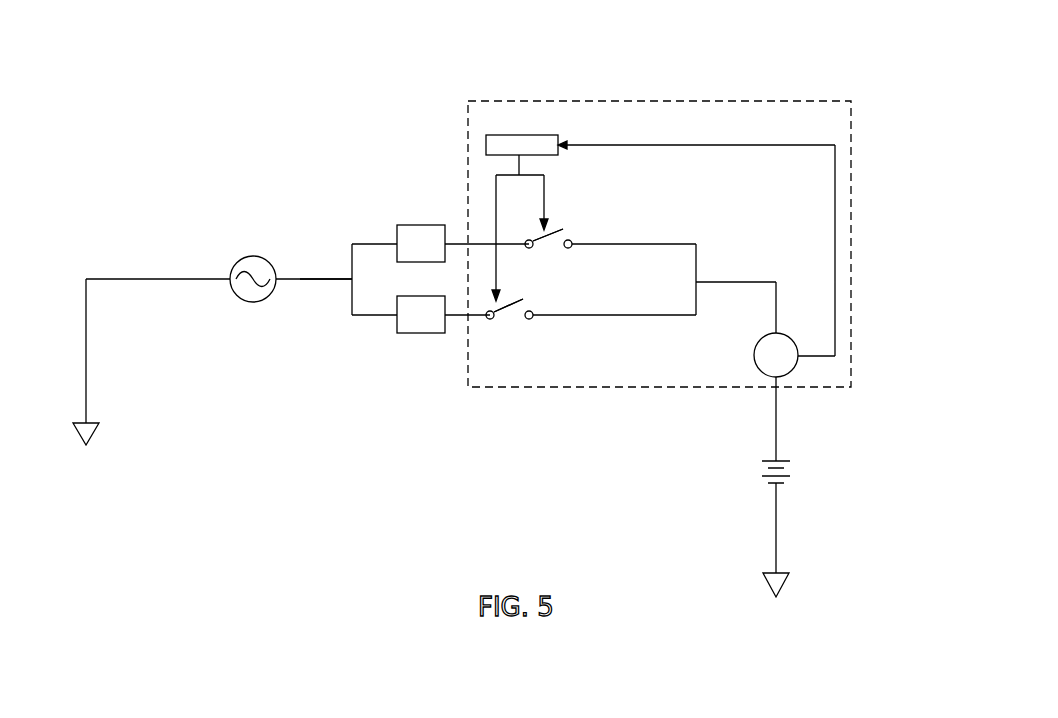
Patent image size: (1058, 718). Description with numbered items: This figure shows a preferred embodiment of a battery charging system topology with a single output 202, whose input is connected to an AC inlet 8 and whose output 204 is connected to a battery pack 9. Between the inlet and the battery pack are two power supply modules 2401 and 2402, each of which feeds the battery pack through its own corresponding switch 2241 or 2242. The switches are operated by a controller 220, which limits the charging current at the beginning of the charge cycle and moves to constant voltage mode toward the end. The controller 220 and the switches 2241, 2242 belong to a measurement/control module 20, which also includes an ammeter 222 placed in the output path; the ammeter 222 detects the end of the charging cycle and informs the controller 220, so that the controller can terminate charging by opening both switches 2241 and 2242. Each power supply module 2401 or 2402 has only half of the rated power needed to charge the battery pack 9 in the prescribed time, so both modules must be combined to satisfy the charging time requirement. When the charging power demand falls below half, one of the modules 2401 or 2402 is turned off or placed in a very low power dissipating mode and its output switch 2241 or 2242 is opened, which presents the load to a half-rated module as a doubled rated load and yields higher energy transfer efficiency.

The AC inlet 8 is at (243, 258).
The single output 202 is at (312, 281).
The power supply module 2401 is at (406, 225).
The power supply module 2402 is at (437, 334).
The switch 2241 is at (545, 231).
The switch 2242 is at (508, 303).
The controller 220 is at (505, 135).
The measurement/control module 20 is at (663, 101).
The ammeter 222 is at (793, 368).
The output 204 is at (776, 428).
The battery pack 9 is at (767, 477).